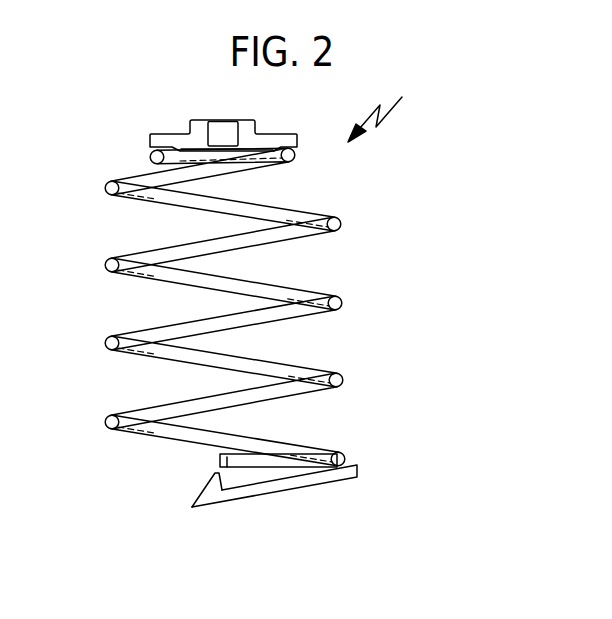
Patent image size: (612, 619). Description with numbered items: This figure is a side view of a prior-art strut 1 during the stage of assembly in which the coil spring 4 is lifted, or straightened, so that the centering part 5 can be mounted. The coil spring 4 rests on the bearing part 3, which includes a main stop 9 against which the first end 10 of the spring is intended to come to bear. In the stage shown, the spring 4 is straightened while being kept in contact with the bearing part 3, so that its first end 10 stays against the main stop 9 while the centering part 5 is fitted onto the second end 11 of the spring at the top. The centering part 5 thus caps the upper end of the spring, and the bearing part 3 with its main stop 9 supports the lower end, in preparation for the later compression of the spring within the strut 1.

The strut 1 is at (381, 112).
The bearing part 3 is at (306, 480).
The coil spring 4 is at (293, 220).
The centering part 5 is at (267, 140).
The main stop 9 is at (213, 477).
The first end 10 is at (230, 468).
The second end 11 is at (188, 152).